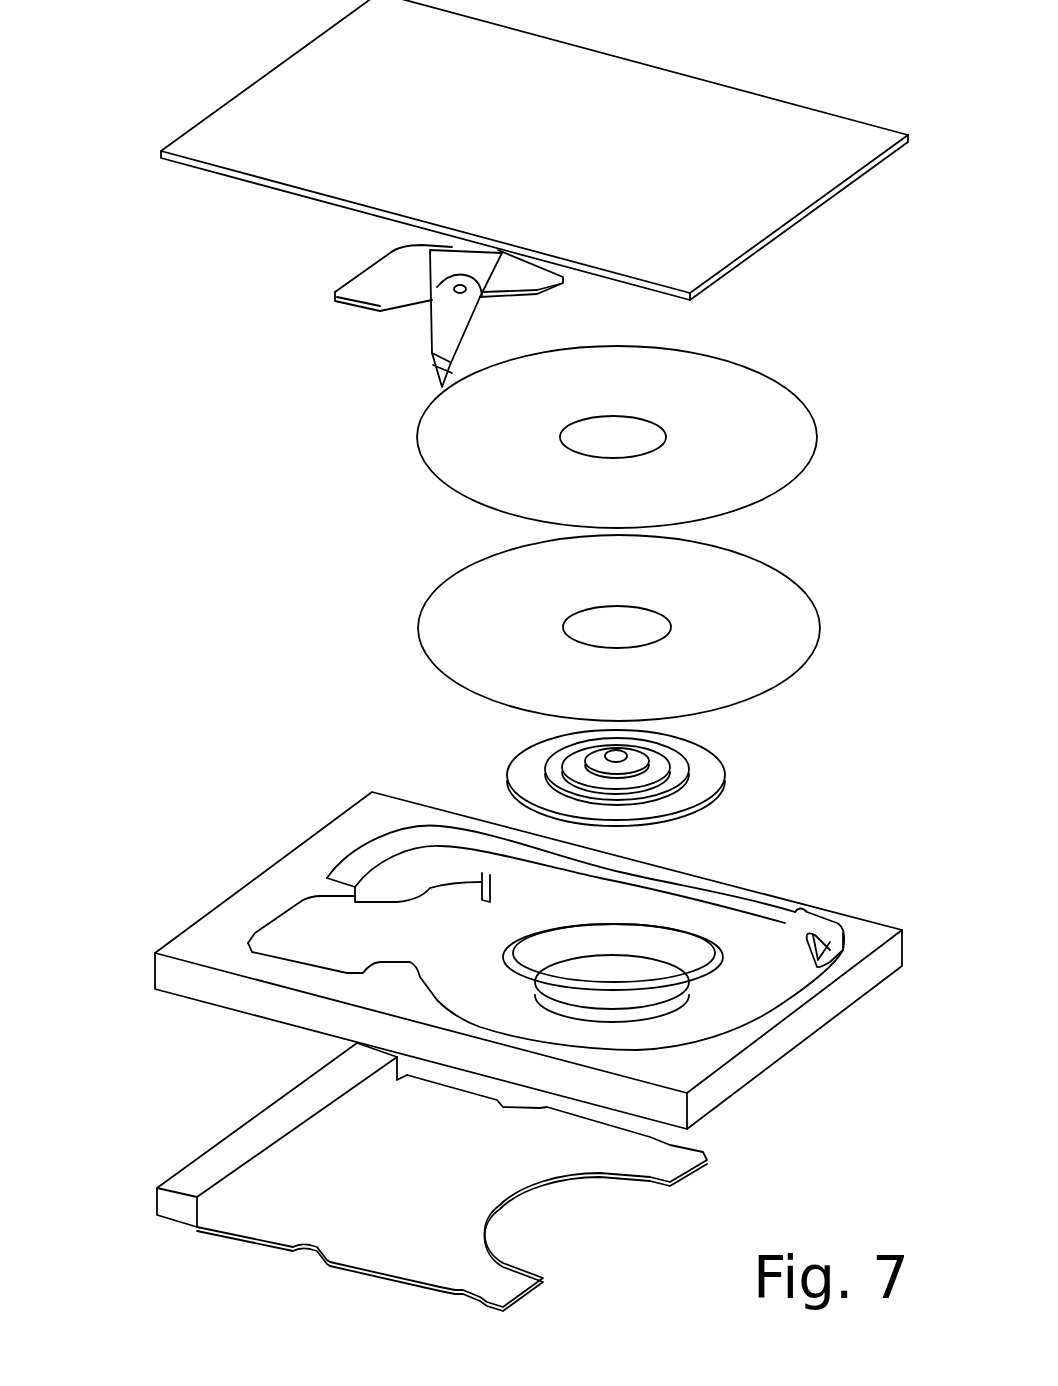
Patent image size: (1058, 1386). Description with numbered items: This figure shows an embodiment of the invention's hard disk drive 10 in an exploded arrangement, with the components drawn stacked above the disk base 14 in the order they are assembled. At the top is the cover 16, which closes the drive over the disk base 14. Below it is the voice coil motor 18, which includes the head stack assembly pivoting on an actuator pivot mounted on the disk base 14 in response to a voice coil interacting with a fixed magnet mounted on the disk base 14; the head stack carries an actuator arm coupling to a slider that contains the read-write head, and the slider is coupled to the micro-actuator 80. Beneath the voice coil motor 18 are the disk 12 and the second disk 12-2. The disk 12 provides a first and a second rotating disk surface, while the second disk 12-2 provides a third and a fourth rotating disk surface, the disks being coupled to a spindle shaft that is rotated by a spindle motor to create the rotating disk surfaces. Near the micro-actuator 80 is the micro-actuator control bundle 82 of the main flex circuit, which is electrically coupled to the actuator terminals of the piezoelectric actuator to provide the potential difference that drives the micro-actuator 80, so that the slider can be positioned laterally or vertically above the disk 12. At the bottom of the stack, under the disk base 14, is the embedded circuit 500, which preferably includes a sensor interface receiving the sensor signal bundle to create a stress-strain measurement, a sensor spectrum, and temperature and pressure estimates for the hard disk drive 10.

The hard disk drive 10 is at (100, 0).
The cover 16 is at (810, 212).
The voice coil motor 18 is at (308, 245).
The disk 12 is at (795, 483).
The second disk 12-2 is at (818, 652).
The micro-actuator 80 is at (687, 781).
The micro-actuator control bundle 82 is at (637, 763).
The disk base 14 is at (815, 1037).
The embedded circuit 500 is at (687, 1170).